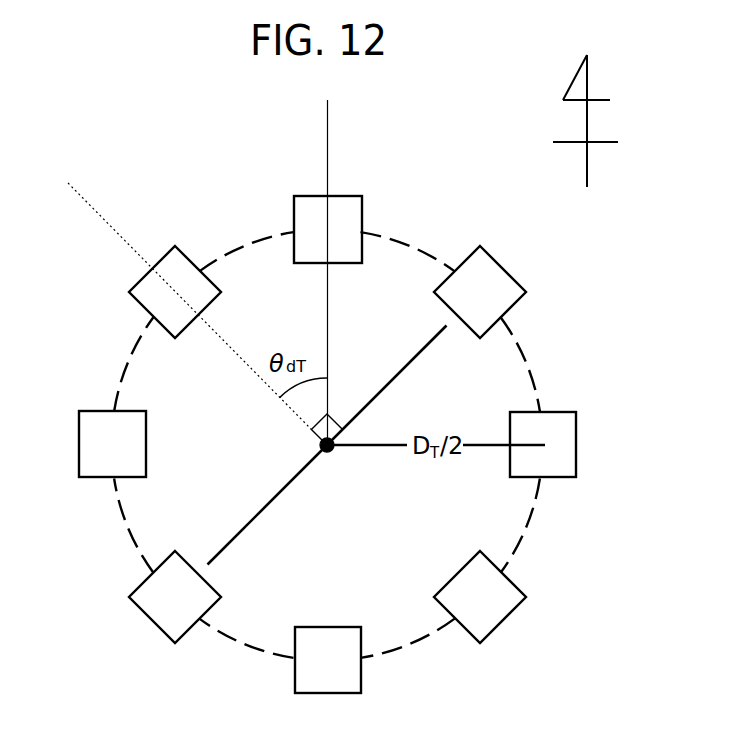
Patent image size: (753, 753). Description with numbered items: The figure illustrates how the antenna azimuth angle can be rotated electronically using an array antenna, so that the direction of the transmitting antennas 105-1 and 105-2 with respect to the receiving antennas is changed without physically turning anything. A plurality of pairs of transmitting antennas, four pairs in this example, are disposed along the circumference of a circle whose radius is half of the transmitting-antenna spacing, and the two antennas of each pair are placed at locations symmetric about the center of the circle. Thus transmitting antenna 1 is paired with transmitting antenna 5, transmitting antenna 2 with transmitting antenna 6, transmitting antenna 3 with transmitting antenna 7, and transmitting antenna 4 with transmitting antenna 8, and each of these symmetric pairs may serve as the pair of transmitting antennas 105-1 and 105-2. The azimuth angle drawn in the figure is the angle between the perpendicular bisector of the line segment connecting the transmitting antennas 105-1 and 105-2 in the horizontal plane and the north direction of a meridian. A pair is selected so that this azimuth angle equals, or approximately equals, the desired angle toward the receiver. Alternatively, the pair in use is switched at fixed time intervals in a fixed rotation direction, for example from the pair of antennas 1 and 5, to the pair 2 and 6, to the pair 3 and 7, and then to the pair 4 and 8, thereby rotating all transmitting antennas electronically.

The transmitting antenna 105-1 is at (148, 633).
The transmitting antenna 105-2 is at (523, 287).
The transmitting antenna # 1 is at (561, 444).
The transmitting antenna # 2 is at (545, 252).
The transmitting antenna # 3 is at (328, 229).
The transmitting antenna # 4 is at (175, 292).
The transmitting antenna # 5 is at (112, 444).
The transmitting antenna # 6 is at (175, 597).
The transmitting antenna # 7 is at (328, 660).
The transmitting antenna # 8 is at (480, 597).